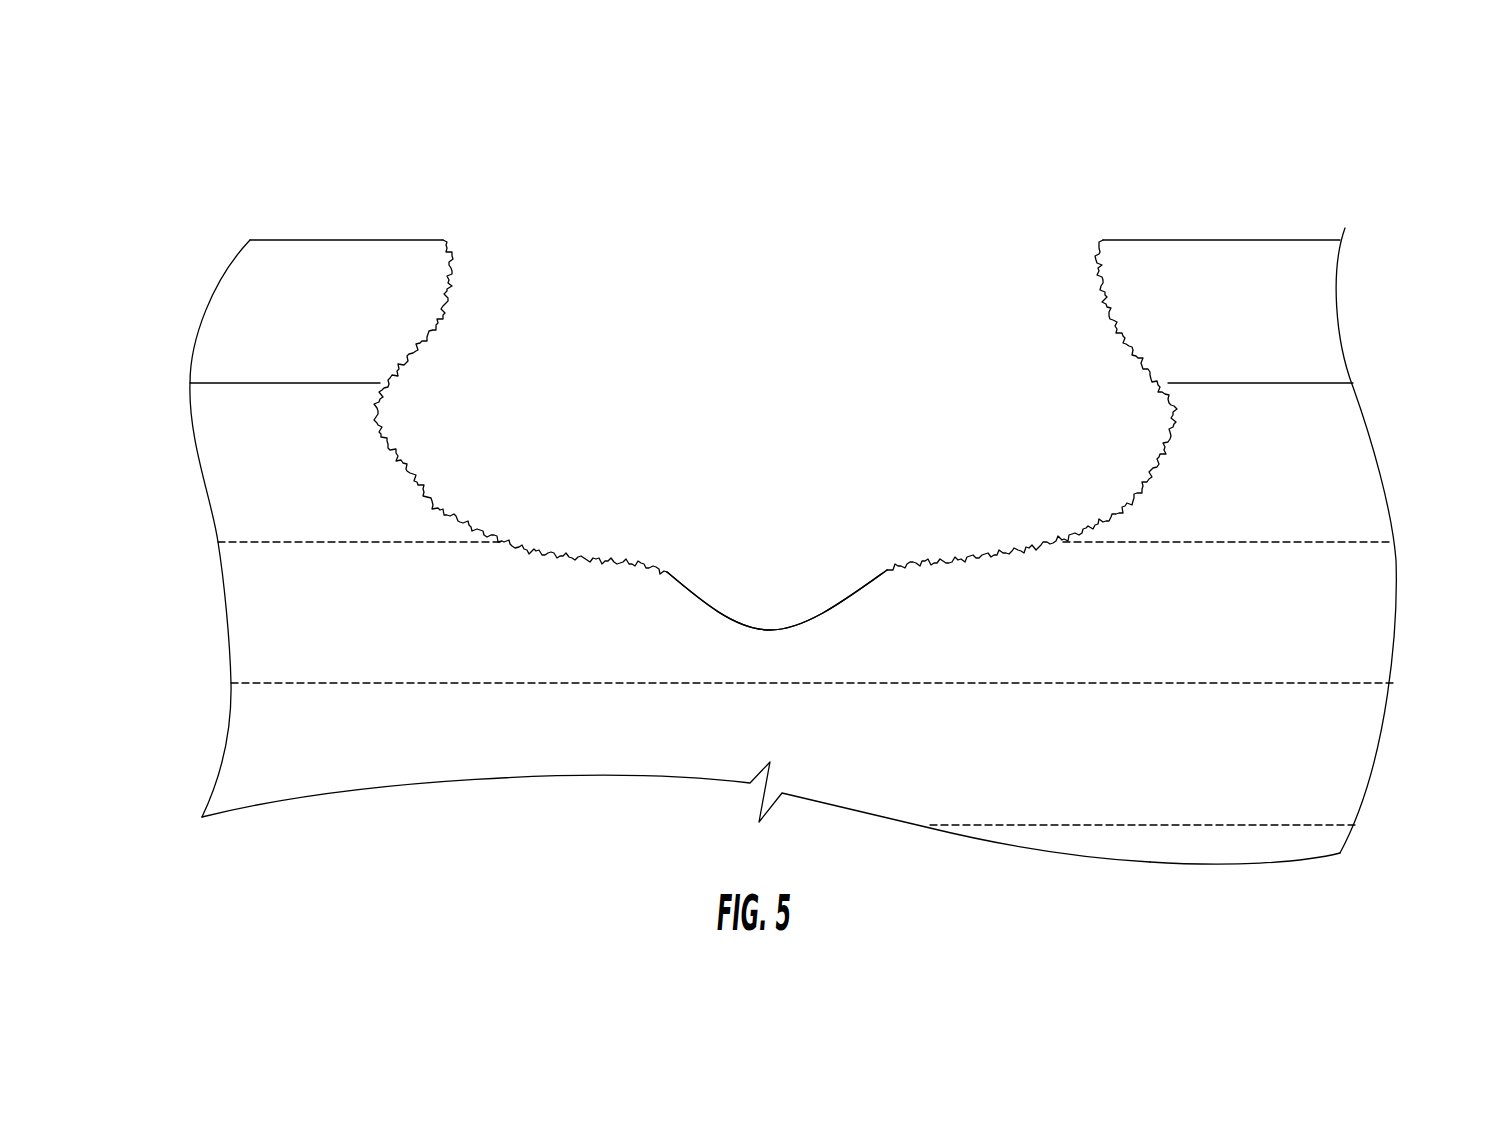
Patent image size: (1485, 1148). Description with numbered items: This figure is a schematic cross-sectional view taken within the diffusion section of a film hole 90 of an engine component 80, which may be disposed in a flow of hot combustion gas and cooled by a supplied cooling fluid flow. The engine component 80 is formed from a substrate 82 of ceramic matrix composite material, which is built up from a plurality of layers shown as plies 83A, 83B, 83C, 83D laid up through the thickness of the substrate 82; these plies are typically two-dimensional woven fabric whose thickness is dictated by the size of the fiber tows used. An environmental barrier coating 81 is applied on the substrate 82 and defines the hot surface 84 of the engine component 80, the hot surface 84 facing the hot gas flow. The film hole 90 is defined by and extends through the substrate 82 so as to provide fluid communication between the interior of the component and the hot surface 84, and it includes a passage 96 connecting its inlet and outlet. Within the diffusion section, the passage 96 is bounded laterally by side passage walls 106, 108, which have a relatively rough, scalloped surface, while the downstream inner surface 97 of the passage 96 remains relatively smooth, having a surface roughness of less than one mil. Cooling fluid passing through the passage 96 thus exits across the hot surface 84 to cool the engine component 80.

The engine component 80 is at (1150, 110).
The environmental barrier coating 81 is at (1270, 280).
The substrate 82 is at (258, 623).
The ply 83A is at (1333, 453).
The ply 83B is at (1343, 575).
The ply 83C is at (1357, 715).
The ply 83D is at (1237, 843).
The hot surface 84 is at (364, 238).
The film hole 90 is at (775, 406).
The passage 96 is at (792, 405).
The downstream inner surface 97 is at (773, 627).
The side passage wall 106 is at (392, 413).
The side passage wall 108 is at (1143, 383).